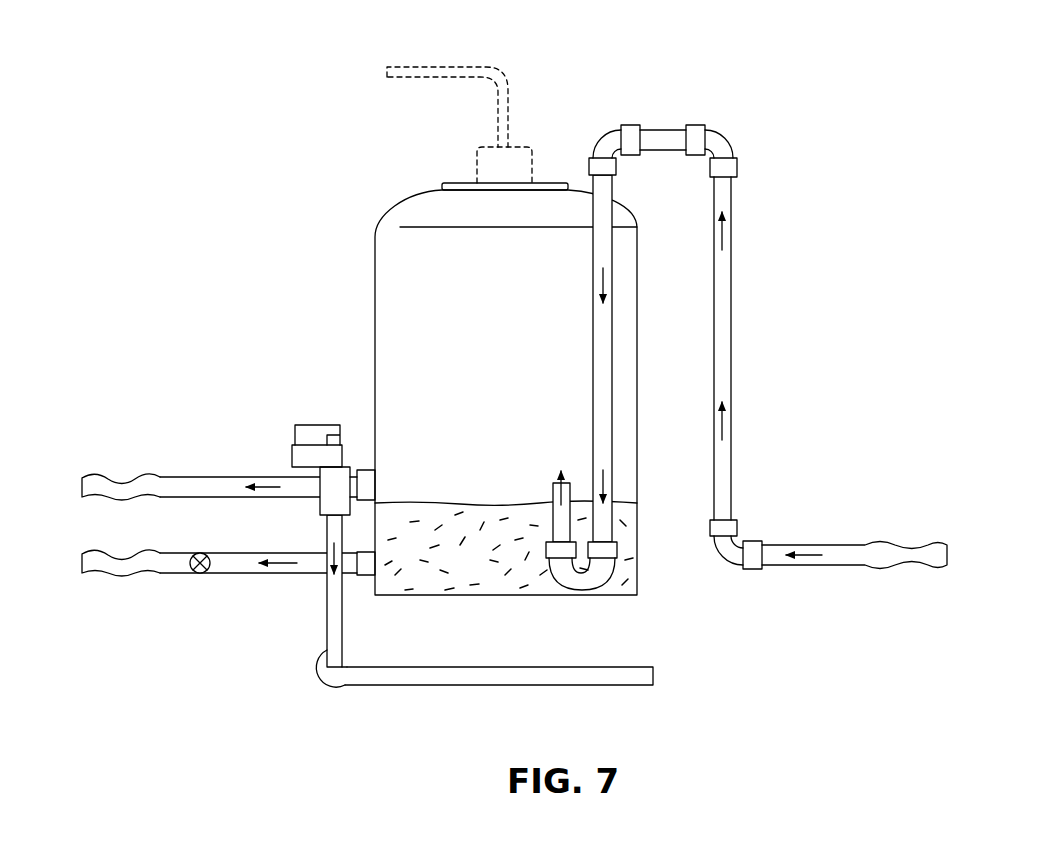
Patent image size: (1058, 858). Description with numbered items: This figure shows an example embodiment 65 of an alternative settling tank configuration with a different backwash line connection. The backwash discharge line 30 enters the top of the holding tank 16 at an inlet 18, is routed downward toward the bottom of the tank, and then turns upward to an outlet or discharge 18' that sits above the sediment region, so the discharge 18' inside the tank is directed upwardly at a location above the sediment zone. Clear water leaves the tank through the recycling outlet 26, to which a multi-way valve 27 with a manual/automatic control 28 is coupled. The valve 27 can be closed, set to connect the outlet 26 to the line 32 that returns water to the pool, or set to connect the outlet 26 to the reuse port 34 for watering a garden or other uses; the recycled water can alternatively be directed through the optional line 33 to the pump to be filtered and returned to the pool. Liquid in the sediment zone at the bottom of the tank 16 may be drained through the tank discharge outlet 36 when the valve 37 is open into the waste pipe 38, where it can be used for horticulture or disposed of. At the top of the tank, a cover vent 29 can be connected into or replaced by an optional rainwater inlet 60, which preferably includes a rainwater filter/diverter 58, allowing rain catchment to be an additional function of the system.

The holding tank 16 is at (400, 207).
The inlet 18 is at (665, 345).
The outlet (discharge) 18' is at (547, 517).
The recycling outlet 26 is at (366, 468).
The multi-way valve 27 is at (327, 497).
The manual/automatic control 28 is at (274, 468).
The cover vent 29 is at (447, 185).
The backwash discharge line 30 is at (850, 555).
The line 32 is at (343, 630).
The optional line 33 is at (492, 667).
The reuse port 34 is at (113, 480).
The tank discharge outlet 36 is at (366, 578).
The valve 37 is at (200, 575).
The waste pipe 38 is at (113, 560).
The rainwater filter/diverter 58 is at (477, 150).
The rainwater inlet 60 is at (392, 78).
The example embodiment 65 is at (812, 66).